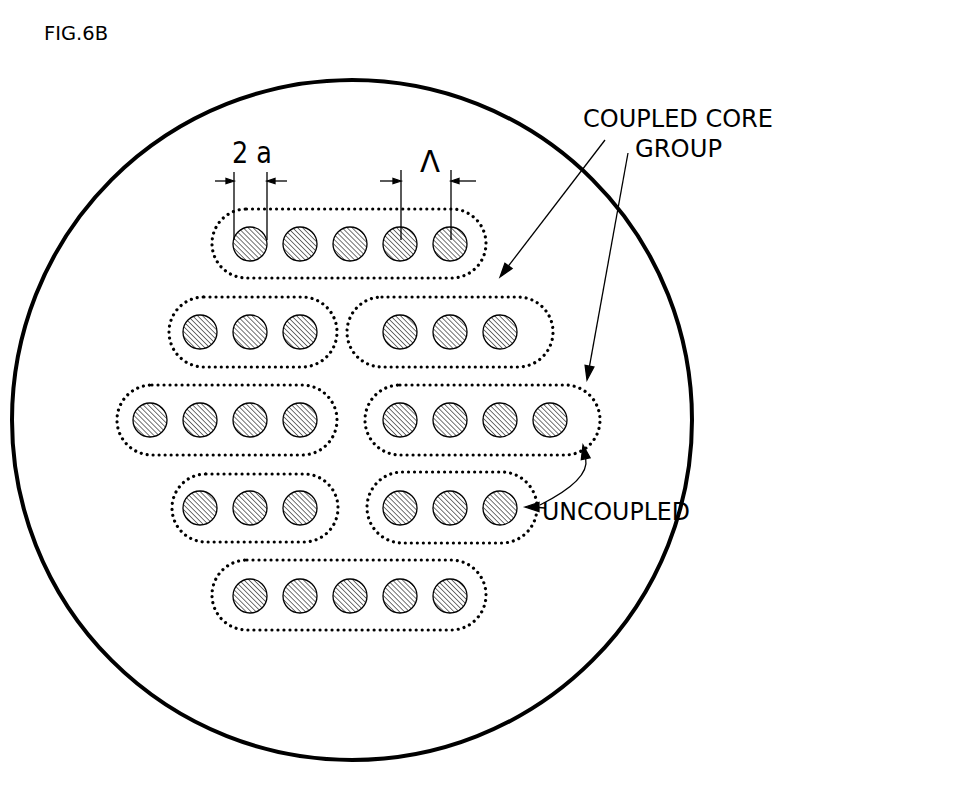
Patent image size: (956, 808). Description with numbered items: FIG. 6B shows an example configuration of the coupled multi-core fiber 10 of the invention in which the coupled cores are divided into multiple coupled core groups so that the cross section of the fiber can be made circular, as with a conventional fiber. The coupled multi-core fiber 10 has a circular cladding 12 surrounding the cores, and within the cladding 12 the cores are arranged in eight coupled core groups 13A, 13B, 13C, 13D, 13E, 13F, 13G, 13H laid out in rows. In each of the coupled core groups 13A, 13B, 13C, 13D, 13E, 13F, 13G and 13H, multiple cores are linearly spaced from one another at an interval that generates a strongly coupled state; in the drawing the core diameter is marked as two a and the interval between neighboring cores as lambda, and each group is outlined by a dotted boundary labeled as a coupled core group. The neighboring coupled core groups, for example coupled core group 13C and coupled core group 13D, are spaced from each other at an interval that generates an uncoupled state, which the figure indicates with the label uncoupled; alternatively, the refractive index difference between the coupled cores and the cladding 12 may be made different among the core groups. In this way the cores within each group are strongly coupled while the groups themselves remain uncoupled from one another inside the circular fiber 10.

The coupled multi-core fiber 10 is at (352, 392).
The cladding 12 is at (348, 95).
The coupled core group 13A is at (220, 243).
The coupled core group 13B is at (528, 318).
The coupled core group 13C is at (573, 415).
The coupled core group 13D is at (505, 540).
The coupled core group 13E is at (222, 602).
The coupled core group 13F is at (177, 508).
The coupled core group 13G is at (152, 392).
The coupled core group 13H is at (188, 305).